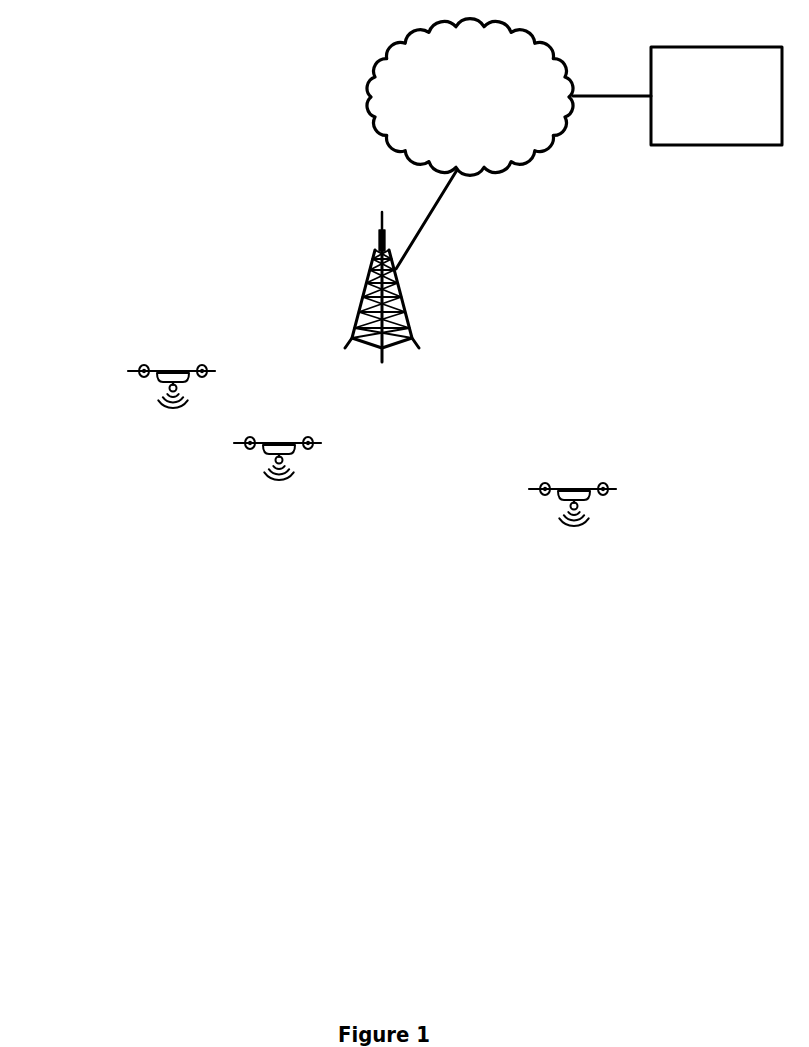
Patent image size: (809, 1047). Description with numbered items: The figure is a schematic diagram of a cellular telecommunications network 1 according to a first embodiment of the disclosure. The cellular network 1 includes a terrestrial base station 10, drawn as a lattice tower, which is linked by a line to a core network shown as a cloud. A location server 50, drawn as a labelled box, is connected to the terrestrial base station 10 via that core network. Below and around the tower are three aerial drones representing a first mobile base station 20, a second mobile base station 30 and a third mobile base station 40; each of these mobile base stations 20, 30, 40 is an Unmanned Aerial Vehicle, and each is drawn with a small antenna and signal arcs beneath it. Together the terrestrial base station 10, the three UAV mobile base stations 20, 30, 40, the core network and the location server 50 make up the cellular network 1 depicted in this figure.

The cellular telecommunications network 1 is at (76, 58).
The terrestrial base station 10 is at (373, 264).
The first mobile base station 20 is at (168, 371).
The second mobile base station 30 is at (274, 444).
The third mobile base station 40 is at (570, 490).
The location server 50 is at (716, 96).